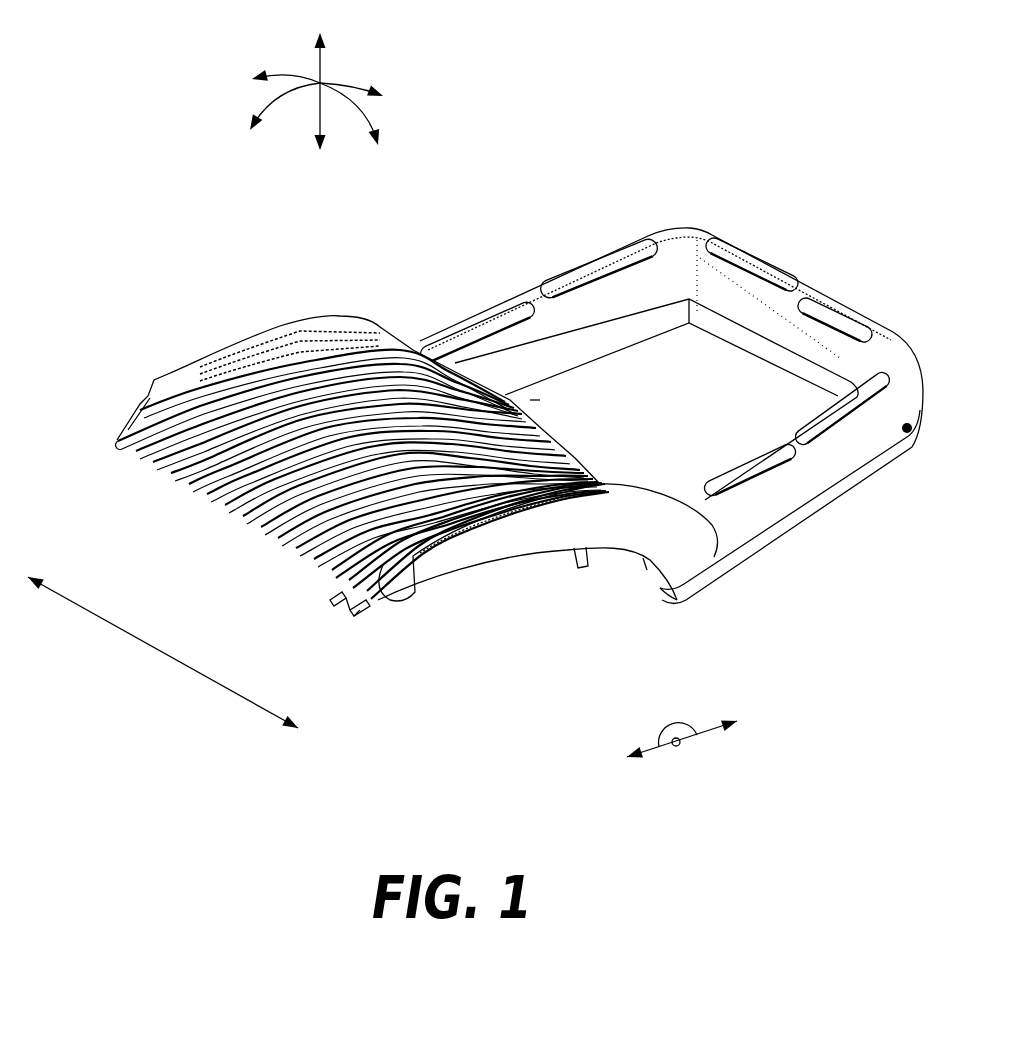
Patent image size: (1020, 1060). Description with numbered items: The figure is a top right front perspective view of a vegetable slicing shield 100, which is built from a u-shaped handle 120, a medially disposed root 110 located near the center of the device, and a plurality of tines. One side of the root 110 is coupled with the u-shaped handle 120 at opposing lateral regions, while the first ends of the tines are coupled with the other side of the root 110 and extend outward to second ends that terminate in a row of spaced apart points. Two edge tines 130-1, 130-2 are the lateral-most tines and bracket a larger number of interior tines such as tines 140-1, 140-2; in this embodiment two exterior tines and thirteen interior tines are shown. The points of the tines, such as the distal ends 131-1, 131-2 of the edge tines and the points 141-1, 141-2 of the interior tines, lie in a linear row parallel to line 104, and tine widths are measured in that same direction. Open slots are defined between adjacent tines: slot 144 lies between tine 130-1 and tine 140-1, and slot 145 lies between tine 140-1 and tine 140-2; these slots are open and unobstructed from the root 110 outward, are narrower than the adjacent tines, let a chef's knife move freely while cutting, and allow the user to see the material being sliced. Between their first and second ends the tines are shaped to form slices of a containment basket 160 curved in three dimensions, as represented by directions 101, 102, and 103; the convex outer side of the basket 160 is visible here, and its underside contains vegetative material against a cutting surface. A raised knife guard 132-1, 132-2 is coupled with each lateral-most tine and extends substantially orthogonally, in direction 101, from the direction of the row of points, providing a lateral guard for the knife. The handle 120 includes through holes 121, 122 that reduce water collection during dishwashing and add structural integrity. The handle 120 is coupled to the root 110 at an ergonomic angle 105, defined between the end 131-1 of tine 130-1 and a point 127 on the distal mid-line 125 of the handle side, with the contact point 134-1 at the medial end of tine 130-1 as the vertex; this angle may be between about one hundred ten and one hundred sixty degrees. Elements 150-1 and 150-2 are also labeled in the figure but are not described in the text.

The vegetable slicing shield 100 is at (600, 36).
The direction 101 is at (313, 127).
The direction 102 is at (340, 83).
The direction 103 is at (363, 120).
The line 104 is at (186, 672).
The angle 105 is at (677, 757).
The root 110 is at (643, 560).
The u-shaped handle 120 is at (692, 228).
The through hole 121 is at (600, 268).
The through hole 122 is at (510, 315).
The distal mid-line 125 is at (800, 507).
The point 127 is at (907, 433).
The edge tine 130-1 is at (403, 583).
The edge tine 130-2 is at (133, 423).
The distal end 131-1 is at (378, 593).
The distal end 131-2 is at (121, 445).
The raised knife guard 132-1 is at (433, 540).
The raised knife guard 132-2 is at (163, 380).
The contact point 134-1 is at (675, 595).
The interior tine 140-1 is at (400, 547).
The interior tine 140-2 is at (393, 533).
The point 141-1 is at (352, 606).
The point 141-2 is at (328, 574).
The open slot 144 is at (360, 610).
The open slot 145 is at (347, 603).
The first latch tab 150-1 is at (588, 560).
The second latch tab 150-2 is at (573, 553).
The containment basket 160 is at (540, 400).